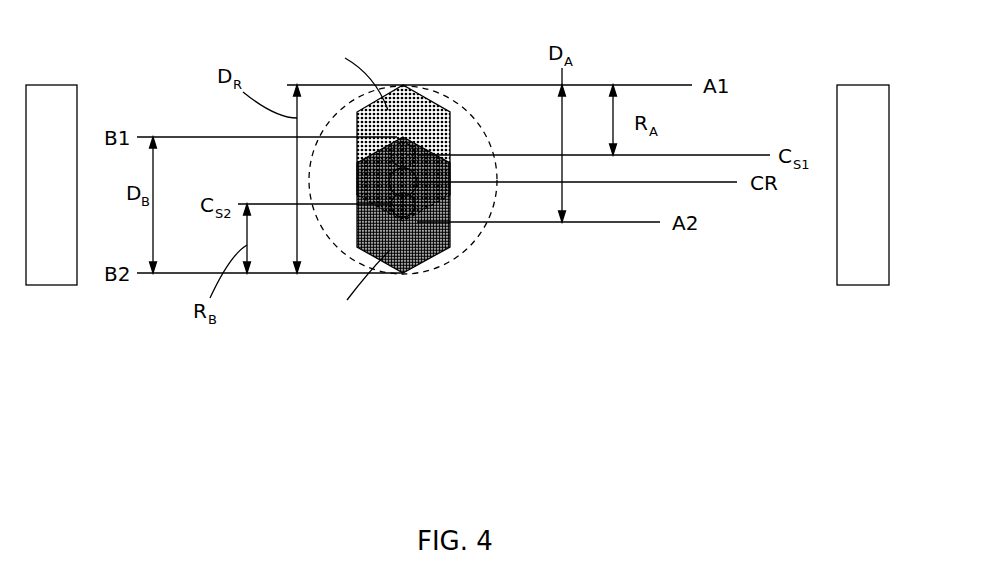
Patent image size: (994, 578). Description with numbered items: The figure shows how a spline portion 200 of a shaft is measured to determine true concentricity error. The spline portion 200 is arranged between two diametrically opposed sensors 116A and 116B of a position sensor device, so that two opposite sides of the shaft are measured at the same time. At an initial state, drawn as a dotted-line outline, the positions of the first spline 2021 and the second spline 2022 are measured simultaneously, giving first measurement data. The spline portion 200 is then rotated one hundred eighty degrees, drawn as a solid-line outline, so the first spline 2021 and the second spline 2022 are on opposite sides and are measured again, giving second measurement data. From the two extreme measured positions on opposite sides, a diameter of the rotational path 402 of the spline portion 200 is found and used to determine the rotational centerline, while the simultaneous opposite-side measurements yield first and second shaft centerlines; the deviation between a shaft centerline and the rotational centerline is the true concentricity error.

The sensor 116A is at (48, 83).
The sensor 116B is at (853, 83).
The spline portion 200 is at (377, 118).
The first spline 2021 is at (403, 85).
The second spline 2022 is at (403, 137).
The rotational path 402 is at (468, 245).